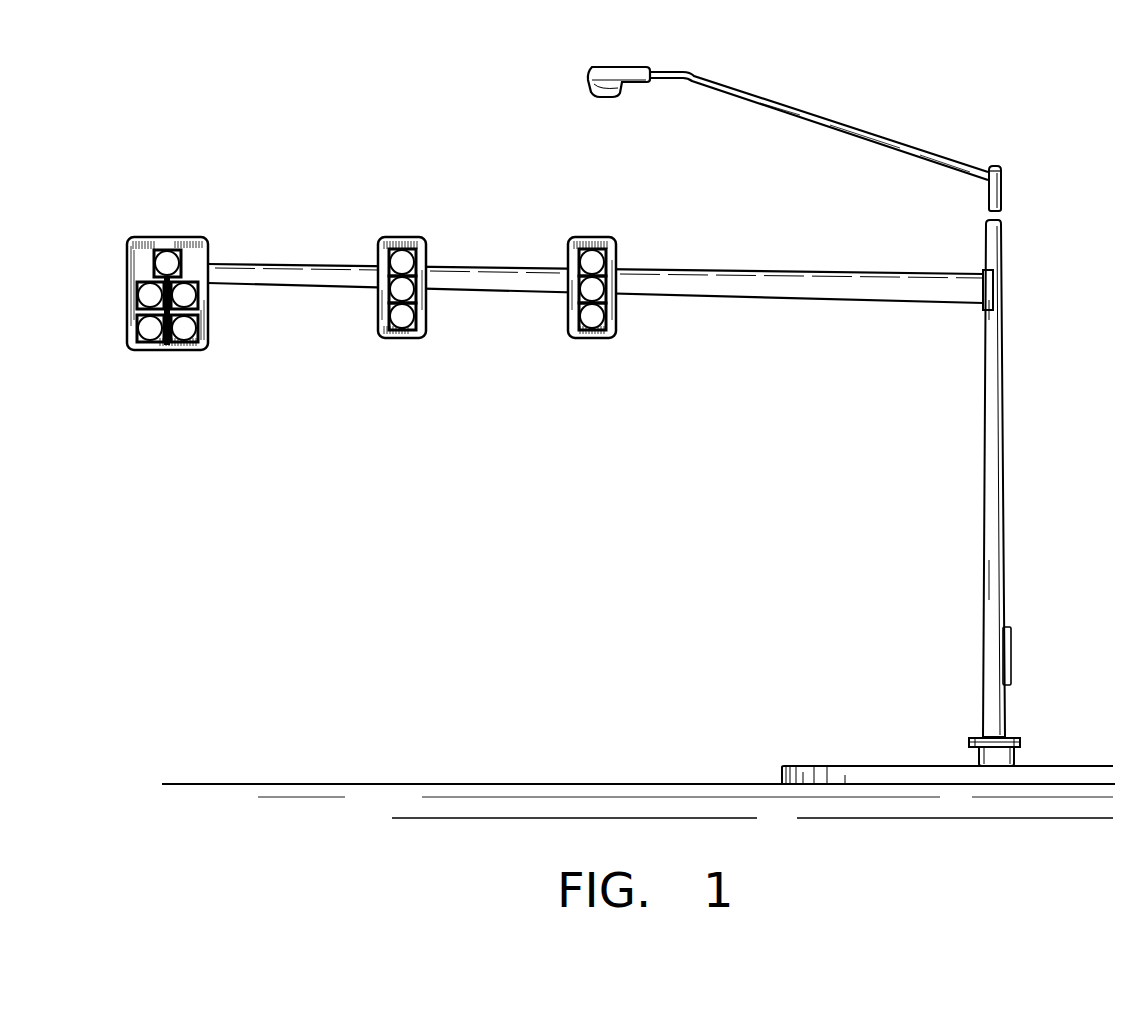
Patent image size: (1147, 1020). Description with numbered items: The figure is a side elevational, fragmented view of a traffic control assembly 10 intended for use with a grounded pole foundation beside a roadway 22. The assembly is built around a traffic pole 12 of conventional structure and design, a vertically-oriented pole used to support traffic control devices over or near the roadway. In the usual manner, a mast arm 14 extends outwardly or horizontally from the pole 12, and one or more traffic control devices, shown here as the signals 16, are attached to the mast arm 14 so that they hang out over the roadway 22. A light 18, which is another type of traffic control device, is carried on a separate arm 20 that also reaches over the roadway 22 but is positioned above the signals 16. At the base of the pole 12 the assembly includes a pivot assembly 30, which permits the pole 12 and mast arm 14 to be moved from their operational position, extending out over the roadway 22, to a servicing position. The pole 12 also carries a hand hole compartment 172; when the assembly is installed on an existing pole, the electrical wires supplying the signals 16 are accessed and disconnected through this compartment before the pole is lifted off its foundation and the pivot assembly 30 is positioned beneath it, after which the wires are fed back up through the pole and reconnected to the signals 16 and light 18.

The traffic control assembly 10 is at (635, 391).
The traffic pole 12 is at (991, 525).
The mast arm 14 is at (825, 285).
The signals 16 is at (185, 237).
The light 18 is at (623, 67).
The arm 20 is at (870, 138).
The roadway 22 is at (565, 783).
The pivot assembly 30 is at (1013, 755).
The hand hole compartment 172 is at (1012, 662).